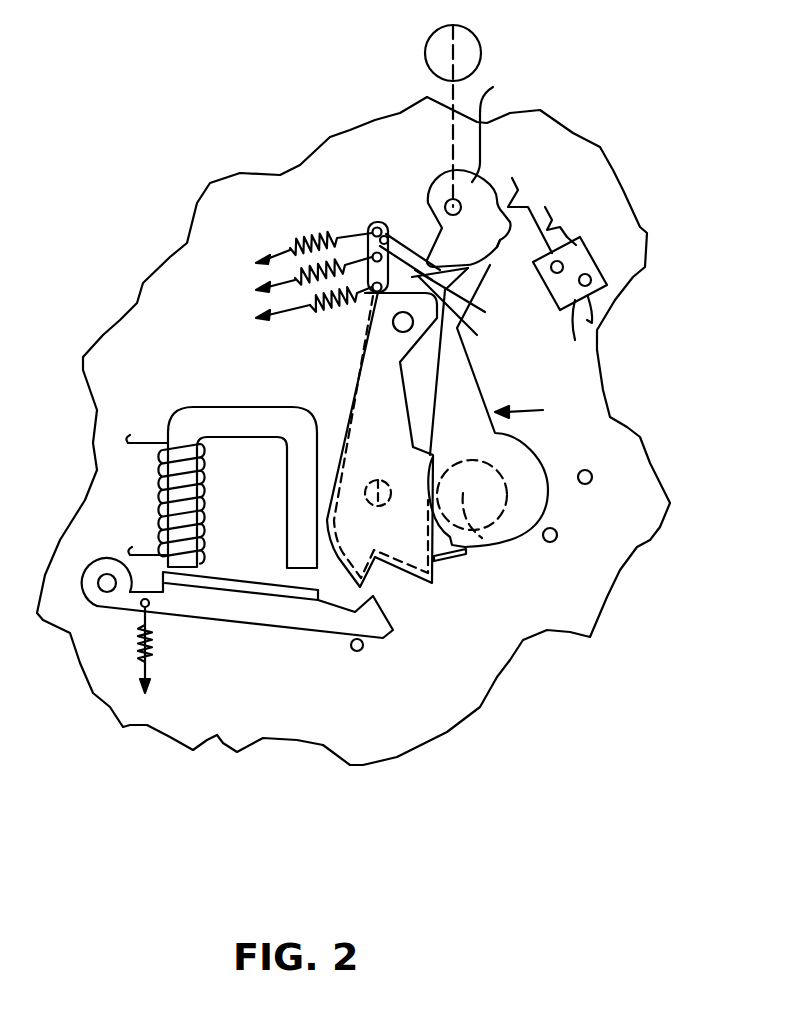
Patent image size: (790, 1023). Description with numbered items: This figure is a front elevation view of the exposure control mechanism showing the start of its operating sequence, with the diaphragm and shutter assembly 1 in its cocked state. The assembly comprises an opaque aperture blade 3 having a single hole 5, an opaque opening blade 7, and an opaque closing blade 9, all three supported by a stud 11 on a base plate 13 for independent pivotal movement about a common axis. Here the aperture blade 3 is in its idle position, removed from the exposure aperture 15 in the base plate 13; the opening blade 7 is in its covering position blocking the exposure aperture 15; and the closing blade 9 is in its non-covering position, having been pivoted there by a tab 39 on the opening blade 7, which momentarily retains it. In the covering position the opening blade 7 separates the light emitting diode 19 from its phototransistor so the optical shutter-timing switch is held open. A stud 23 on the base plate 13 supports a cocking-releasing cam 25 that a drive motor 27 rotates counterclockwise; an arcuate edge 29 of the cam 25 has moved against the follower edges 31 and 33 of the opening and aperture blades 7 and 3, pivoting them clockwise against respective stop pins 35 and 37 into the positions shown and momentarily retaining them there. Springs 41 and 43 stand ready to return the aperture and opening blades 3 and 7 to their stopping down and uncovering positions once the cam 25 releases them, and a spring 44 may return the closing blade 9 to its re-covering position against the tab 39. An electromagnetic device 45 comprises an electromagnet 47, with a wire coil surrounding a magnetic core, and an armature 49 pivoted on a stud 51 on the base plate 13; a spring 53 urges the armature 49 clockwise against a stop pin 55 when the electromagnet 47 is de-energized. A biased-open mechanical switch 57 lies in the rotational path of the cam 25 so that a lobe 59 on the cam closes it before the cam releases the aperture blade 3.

The diaphragm and shutter assembly 1 is at (527, 412).
The aperture blade 3 is at (418, 372).
The hole 5 is at (385, 478).
The opening blade 7 is at (463, 385).
The closing blade 9 is at (370, 383).
The stud 11 is at (393, 323).
The base plate 13 is at (625, 457).
The exposure aperture 15 is at (480, 530).
The light emitting diode 19 is at (383, 222).
The stud 23 is at (443, 200).
The cocking-releasing cam 25 is at (496, 122).
The drive motor 27 is at (430, 57).
The arcuate edge 29 is at (420, 257).
The follower edge 31 is at (464, 297).
The follower edge 33 is at (462, 312).
The stop pin 35 is at (589, 484).
The stop pin 37 is at (555, 541).
The tab 39 is at (443, 565).
The spring 41 is at (292, 272).
The spring 43 is at (317, 238).
The spring 44 is at (300, 297).
The electromagnetic device 45 is at (172, 413).
The electromagnet 47 is at (240, 413).
The armature 49 is at (260, 617).
The stud 51 is at (97, 582).
The spring 53 is at (153, 640).
The stop pin 55 is at (357, 651).
The mechanical switch 57 is at (560, 223).
The lobe 59 is at (508, 240).